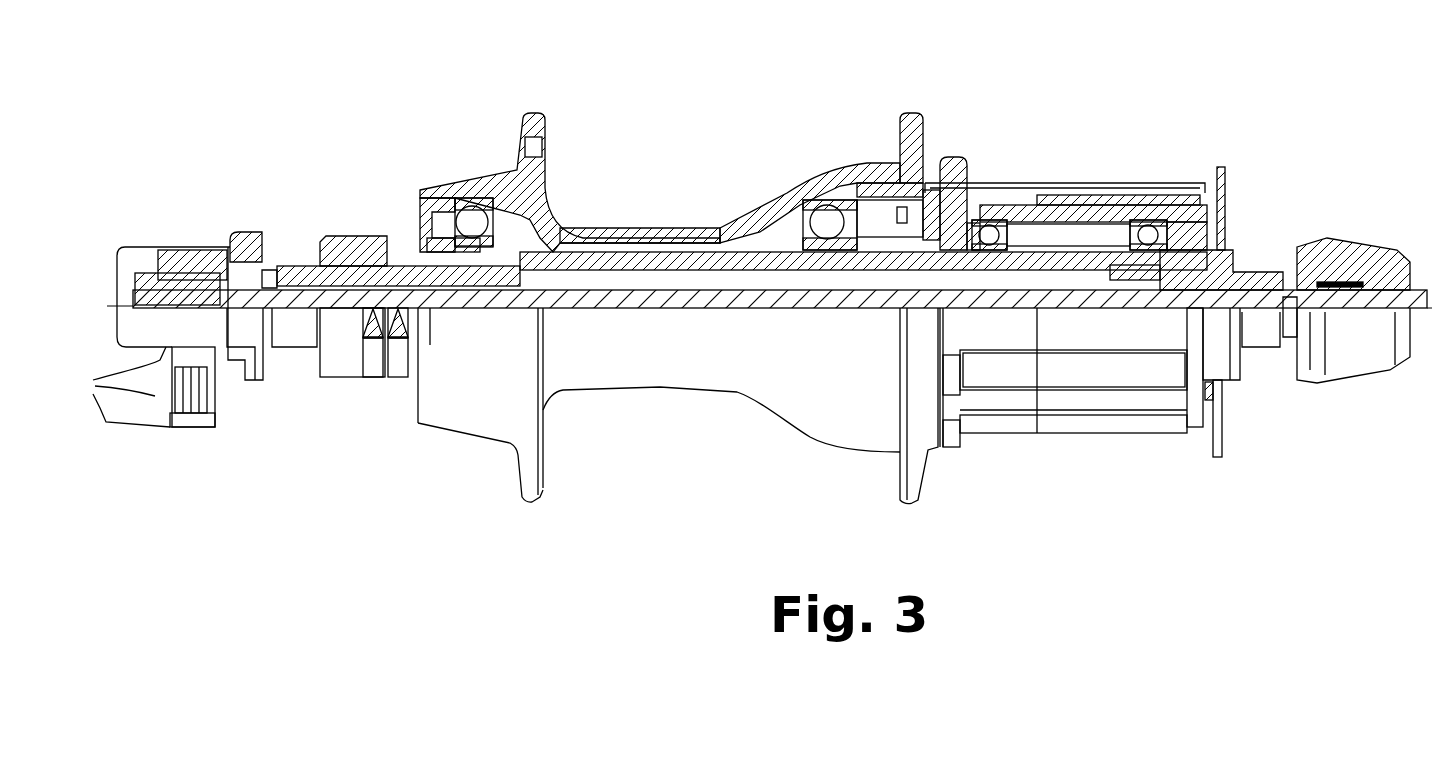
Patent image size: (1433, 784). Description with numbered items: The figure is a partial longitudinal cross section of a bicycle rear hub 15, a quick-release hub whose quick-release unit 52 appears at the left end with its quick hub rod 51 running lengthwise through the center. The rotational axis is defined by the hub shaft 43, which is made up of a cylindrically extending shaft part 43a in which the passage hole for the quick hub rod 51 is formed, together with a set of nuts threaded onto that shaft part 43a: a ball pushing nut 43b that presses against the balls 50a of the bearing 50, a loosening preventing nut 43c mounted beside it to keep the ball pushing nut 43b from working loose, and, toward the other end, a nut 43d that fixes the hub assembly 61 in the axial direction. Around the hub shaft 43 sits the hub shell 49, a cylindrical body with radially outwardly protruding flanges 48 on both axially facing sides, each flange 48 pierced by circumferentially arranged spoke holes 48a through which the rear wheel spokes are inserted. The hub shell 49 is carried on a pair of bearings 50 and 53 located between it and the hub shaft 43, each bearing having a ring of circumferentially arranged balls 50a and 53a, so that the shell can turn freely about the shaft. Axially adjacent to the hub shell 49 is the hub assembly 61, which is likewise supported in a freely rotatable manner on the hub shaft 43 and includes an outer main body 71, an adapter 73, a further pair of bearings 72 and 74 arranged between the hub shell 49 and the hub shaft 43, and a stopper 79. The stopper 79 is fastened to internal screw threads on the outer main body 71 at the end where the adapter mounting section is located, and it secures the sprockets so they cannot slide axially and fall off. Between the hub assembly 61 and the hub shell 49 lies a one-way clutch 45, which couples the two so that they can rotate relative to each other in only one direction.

The rear hub 15 is at (1271, 120).
The hub shaft 43 is at (567, 243).
The shaft part 43a is at (287, 262).
The ball pushing nut 43b is at (391, 380).
The loosening preventing nut 43c is at (348, 233).
The nut 43d is at (1222, 228).
The one-way clutch 45 is at (860, 162).
The flanges 48 is at (522, 145).
The spoke holes 48a is at (557, 150).
The hub shell 49 is at (630, 432).
The bearing 50 is at (462, 200).
The balls 50a is at (425, 200).
The quick hub rod 51 is at (463, 310).
The quick-release unit 52 is at (161, 224).
The bearing 53 is at (815, 198).
The balls 53a is at (787, 193).
The hub assembly 61 is at (1163, 446).
The outer main body 71 is at (1022, 172).
The bearing 72 is at (984, 220).
The adapter 73 is at (1106, 435).
The bearing 74 is at (1196, 190).
The stopper 79 is at (1228, 428).